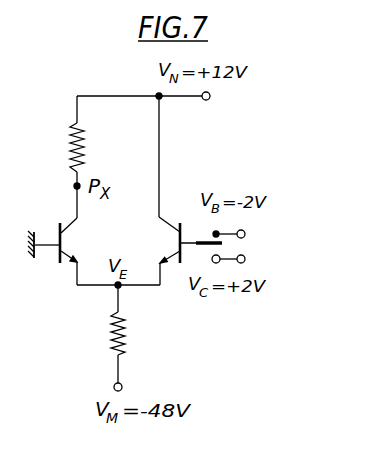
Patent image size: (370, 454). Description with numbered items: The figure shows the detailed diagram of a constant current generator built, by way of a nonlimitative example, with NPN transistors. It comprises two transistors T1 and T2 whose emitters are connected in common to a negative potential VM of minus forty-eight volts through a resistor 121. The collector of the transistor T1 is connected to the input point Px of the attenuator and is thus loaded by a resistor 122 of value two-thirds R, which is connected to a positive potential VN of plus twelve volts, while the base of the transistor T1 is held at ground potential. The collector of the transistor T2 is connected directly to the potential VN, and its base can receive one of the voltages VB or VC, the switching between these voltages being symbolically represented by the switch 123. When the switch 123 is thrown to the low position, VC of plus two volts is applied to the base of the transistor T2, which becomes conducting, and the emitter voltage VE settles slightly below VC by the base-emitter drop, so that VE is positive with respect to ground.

The resistor 121 is at (101, 334).
The resistor 122 is at (101, 147).
The switch 123 is at (212, 237).
The transistor T1 is at (77, 240).
The transistor T2 is at (165, 240).